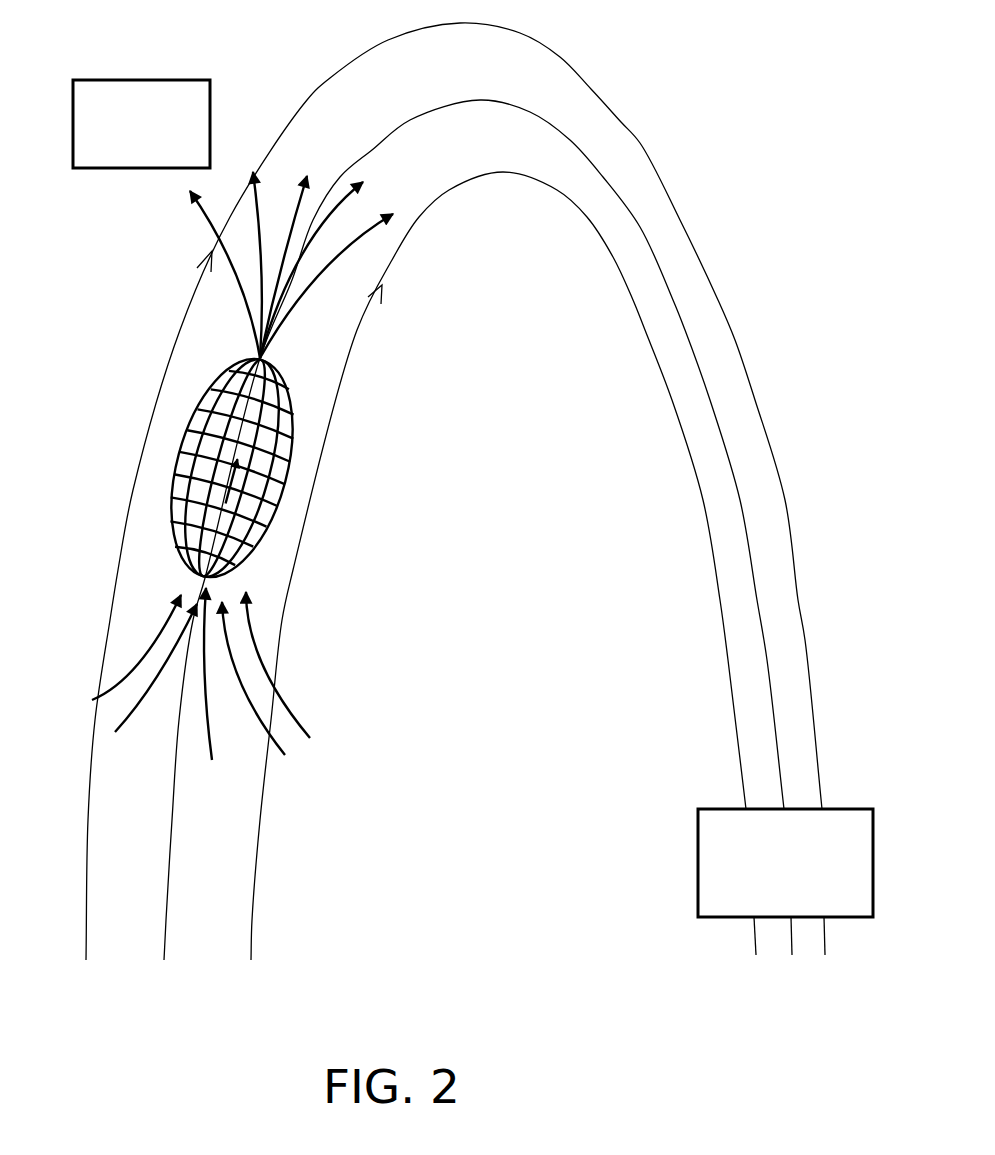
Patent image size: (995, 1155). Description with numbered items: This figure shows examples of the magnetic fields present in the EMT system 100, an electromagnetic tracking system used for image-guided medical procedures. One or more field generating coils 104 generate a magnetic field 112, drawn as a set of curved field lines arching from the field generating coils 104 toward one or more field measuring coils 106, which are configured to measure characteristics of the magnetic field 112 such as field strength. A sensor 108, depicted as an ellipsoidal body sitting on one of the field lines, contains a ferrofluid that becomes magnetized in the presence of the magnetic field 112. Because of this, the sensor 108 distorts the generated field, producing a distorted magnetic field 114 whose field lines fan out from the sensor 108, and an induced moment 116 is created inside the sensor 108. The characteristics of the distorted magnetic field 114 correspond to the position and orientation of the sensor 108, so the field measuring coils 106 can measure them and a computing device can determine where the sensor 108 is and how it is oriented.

The EMT system 100 is at (702, 108).
The field generating coils 104 is at (806, 870).
The field measuring coils 106 is at (163, 134).
The sensor 108 is at (193, 418).
The magnetic field 112 is at (584, 295).
The distorted magnetic field 114 is at (185, 234).
The induced moment 116 is at (230, 500).